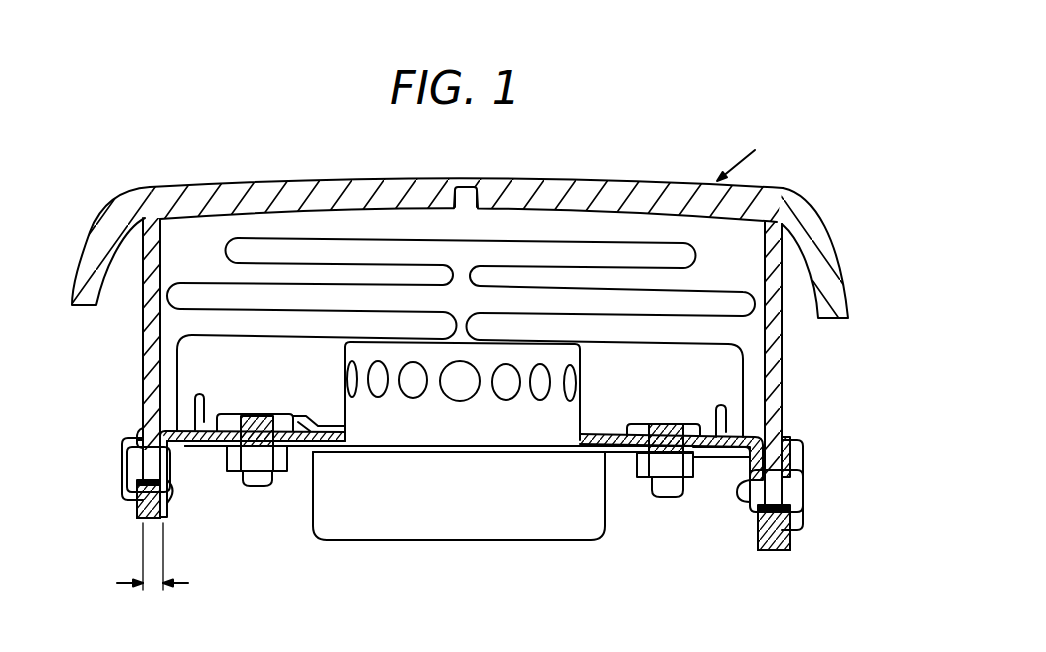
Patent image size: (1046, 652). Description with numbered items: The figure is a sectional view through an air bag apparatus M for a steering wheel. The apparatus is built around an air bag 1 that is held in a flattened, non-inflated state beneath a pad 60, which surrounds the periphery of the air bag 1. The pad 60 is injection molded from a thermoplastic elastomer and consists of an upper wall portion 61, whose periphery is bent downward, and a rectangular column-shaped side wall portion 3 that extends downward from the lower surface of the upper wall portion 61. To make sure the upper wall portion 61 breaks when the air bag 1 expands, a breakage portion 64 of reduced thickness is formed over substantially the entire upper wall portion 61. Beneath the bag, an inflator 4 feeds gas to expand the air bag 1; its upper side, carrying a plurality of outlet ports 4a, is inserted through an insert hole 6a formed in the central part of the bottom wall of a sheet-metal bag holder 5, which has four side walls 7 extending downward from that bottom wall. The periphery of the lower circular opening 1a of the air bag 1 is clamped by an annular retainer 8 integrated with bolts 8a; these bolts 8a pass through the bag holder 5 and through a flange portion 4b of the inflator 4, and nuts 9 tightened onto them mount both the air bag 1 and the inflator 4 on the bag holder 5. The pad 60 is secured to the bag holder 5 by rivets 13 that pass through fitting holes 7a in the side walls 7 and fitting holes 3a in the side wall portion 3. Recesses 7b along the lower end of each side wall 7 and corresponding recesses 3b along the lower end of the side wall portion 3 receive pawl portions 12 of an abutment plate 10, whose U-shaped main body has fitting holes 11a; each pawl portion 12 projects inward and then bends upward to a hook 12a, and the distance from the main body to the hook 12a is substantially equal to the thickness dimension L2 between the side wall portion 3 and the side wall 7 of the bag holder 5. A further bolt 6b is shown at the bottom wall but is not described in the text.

The air bag 1 is at (647, 243).
The lower circular opening 1a is at (372, 442).
The side wall portion 3 is at (147, 332).
The fitting holes 3a is at (125, 442).
The recesses 3b is at (143, 523).
The inflator 4 is at (510, 517).
The outlet ports 4a is at (461, 372).
The flange portion 4b is at (415, 446).
The bag holder 5 is at (218, 440).
The insert hole 6a is at (332, 430).
The fixing bolt 6b is at (263, 427).
The side walls 7 is at (167, 502).
The fitting holes 7a is at (175, 500).
The recesses 7b is at (145, 532).
The annular retainer 8 is at (717, 417).
The bolts 8a is at (247, 425).
The nuts 9 is at (277, 473).
The abutment plate 10 is at (140, 428).
The fitting holes 11a is at (125, 497).
The pawl portions 12 is at (167, 507).
The hook 12a is at (753, 540).
The rivets 13 is at (127, 463).
The pad 60 is at (323, 195).
The upper wall portion 61 is at (195, 186).
The breakage portion 64 is at (463, 184).
The air bag apparatus M is at (746, 157).
The thickness dimension L2 is at (152, 574).